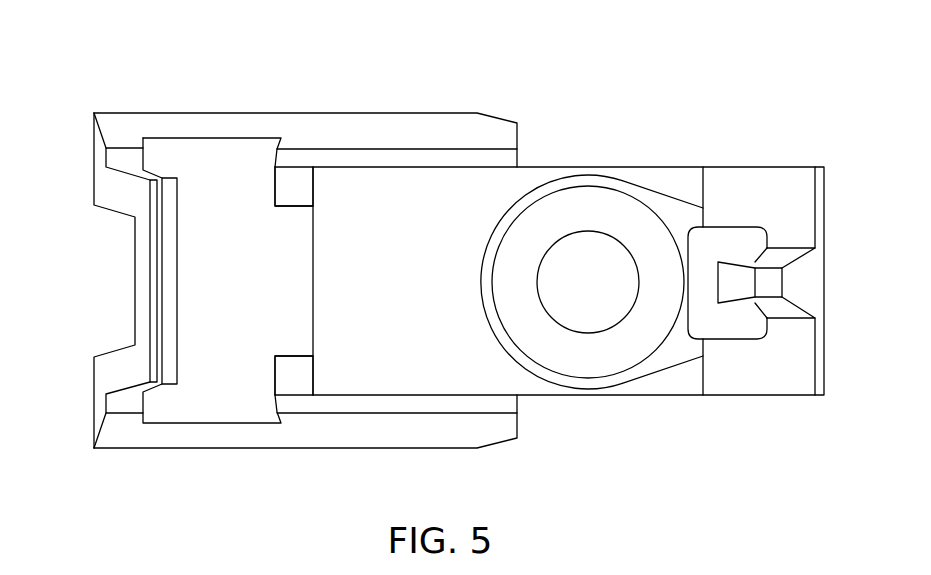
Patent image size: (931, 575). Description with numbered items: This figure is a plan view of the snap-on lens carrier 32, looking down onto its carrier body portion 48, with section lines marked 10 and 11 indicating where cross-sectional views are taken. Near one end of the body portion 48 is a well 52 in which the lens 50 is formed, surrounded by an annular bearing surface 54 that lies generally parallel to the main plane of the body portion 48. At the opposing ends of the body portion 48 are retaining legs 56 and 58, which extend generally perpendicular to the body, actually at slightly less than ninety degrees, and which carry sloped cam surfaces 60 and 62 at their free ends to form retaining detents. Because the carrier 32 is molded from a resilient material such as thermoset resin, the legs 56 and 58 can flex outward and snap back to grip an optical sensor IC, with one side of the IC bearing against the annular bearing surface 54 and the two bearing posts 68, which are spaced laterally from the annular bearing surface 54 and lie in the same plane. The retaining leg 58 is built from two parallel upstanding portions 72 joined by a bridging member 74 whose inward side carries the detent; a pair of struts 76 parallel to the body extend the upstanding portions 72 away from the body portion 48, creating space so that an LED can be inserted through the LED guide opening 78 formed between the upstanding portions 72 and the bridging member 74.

The lens carrier 32 is at (424, 78).
The carrier body portion 48 is at (404, 299).
The lens 50 is at (608, 300).
The well 52 is at (548, 378).
The annular bearing surface 54 is at (623, 190).
The retaining leg 56 is at (802, 283).
The retaining leg 58 is at (134, 224).
The sloped cam surface 60 is at (735, 278).
The sloped cam surface 62 is at (168, 260).
The bearing posts 68 is at (293, 180).
The upstanding portions 72 is at (122, 188).
The bridging member 74 is at (140, 302).
The struts 76 is at (210, 125).
The LED guide opening 78 is at (102, 269).
The section line 10 is at (668, 284).
The section line 11 is at (587, 492).